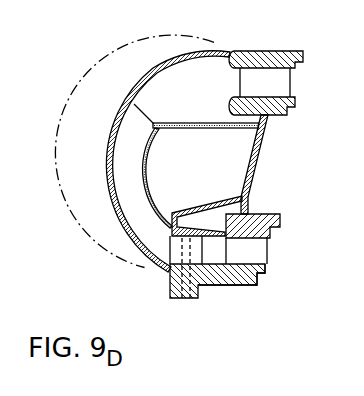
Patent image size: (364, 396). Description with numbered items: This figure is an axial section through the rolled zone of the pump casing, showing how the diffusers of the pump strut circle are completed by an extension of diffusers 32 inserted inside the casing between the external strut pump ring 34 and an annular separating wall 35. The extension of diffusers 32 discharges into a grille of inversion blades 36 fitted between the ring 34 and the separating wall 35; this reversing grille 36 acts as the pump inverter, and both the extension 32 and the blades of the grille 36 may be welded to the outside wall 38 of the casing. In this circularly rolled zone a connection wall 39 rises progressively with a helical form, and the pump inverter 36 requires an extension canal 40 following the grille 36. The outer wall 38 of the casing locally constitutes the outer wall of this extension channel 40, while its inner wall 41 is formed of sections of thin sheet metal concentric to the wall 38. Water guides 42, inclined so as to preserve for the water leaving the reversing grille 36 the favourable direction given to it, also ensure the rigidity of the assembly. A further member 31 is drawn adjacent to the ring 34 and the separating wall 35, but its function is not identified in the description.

The mounting block 31 is at (253, 248).
The extension of diffusers 32 is at (209, 280).
The external strut pump ring 34 is at (242, 286).
The annular separating wall 35 is at (211, 262).
The grille of inversion blades 36 is at (178, 247).
The outside wall of the casing 38 is at (108, 150).
The connection wall 39 is at (212, 128).
The extension canal 40 is at (134, 192).
The inner wall 41 is at (157, 150).
The water guides 42 is at (145, 110).